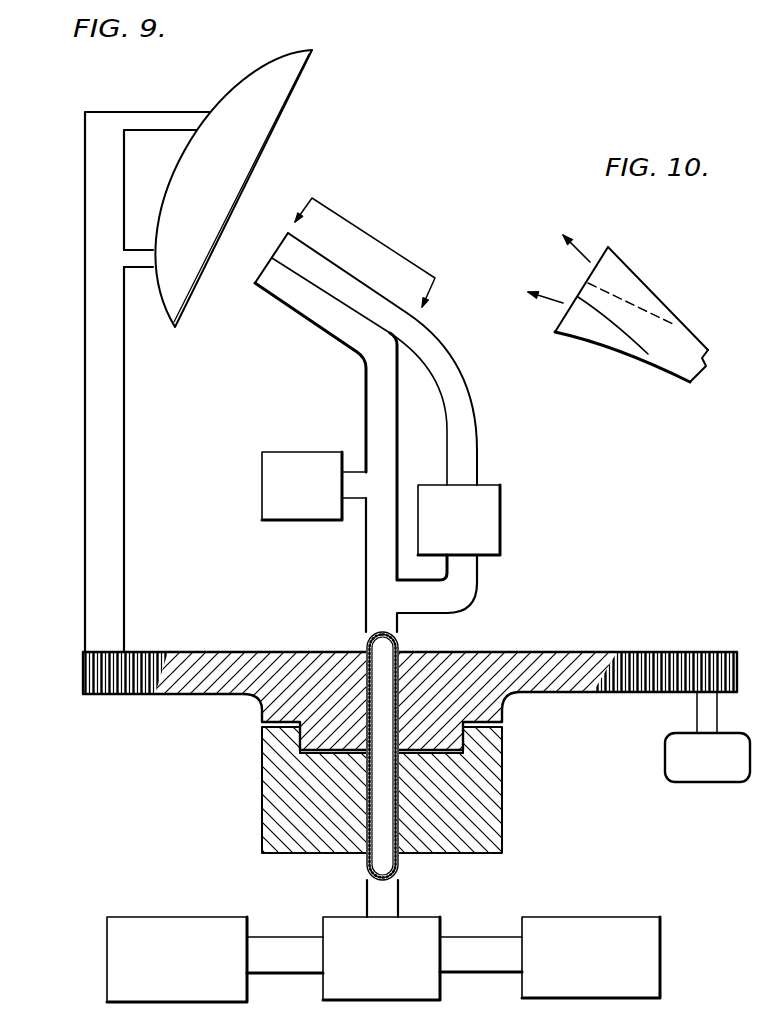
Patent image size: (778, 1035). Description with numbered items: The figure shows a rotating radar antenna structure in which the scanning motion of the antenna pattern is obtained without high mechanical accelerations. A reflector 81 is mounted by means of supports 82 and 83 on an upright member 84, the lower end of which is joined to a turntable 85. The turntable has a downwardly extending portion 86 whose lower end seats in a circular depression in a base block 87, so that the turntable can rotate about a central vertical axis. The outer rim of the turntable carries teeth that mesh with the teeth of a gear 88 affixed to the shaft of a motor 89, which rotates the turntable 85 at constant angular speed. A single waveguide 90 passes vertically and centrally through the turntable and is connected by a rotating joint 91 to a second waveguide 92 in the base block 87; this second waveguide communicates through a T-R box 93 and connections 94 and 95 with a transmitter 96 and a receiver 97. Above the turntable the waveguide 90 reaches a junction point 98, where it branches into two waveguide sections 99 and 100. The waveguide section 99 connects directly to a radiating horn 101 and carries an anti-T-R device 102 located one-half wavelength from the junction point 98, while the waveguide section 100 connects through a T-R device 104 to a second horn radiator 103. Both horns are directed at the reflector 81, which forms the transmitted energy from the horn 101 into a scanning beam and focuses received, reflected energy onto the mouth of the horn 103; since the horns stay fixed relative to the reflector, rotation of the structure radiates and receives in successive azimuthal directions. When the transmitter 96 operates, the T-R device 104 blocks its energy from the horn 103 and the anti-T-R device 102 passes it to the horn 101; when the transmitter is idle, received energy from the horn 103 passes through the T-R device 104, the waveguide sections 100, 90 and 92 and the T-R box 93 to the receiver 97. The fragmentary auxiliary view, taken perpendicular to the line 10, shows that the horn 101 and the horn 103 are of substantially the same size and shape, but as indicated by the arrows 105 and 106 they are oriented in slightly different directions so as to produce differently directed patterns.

In FIG. 9, the section line 10—10' 10 is at (374, 244).
In FIG. 9, the reflector 81 is at (309, 52).
In FIG. 9, the support 82 is at (165, 112).
In FIG. 9, the support 83 is at (140, 268).
In FIG. 9, the upright member 84 is at (125, 427).
In FIG. 9, the turntable 85 is at (281, 651).
In FIG. 9, the downwardly extending portion 86 is at (503, 710).
In FIG. 9, the base block 87 is at (503, 808).
In FIG. 9, the gear 88 is at (705, 652).
In FIG. 9, the motor 89 is at (665, 773).
In FIG. 9, the waveguide 90 is at (400, 637).
In FIG. 9, the rotating joint 91 is at (315, 762).
In FIG. 9, the second waveguide 92 is at (400, 897).
In FIG. 9, the T-R box 93 is at (398, 1000).
In FIG. 9, the connection 94 is at (308, 936).
In FIG. 9, the connection 95 is at (464, 936).
In FIG. 9, the transmitter 96 is at (183, 916).
In FIG. 9, the receiver 97 is at (597, 916).
In FIG. 9, the junction point 98 is at (373, 594).
In FIG. 9, the waveguide section 99 is at (399, 475).
In FIG. 9, the waveguide section 100 is at (478, 587).
In FIG. 9, the radiating horn 101 is at (327, 333).
In FIG. 10, the radiating horn 101 is at (590, 322).
In FIG. 9, the anti-T-R device 102 is at (260, 484).
In FIG. 9, the second horn radiator 103 is at (343, 272).
In FIG. 10, the second horn radiator 103 is at (617, 287).
In FIG. 9, the T-R device 104 is at (503, 533).
In FIG. 10, the arrow 105 is at (586, 258).
In FIG. 10, the arrow 106 is at (557, 305).